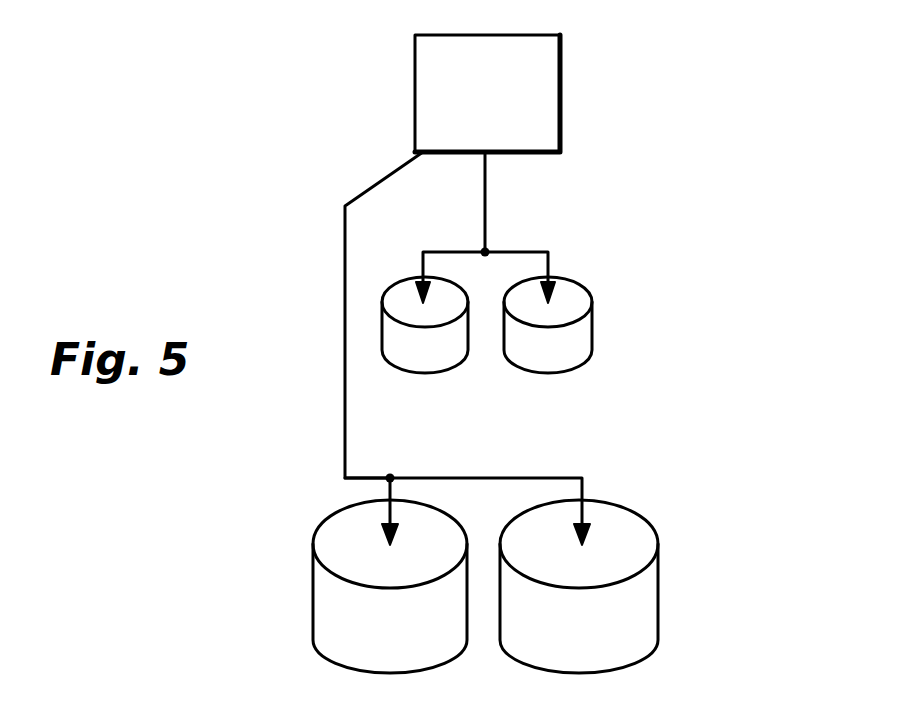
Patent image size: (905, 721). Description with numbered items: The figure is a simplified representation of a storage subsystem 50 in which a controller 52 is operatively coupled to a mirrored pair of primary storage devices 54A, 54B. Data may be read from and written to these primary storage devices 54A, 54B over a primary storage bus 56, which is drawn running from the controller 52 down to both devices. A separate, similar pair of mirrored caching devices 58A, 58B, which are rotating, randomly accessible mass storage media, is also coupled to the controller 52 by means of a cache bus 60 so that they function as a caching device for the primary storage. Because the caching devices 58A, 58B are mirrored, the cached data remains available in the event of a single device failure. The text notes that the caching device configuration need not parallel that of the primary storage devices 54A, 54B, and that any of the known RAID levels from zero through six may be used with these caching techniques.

The storage subsystem 50 is at (638, 235).
The controller 52 is at (415, 78).
The primary storage device 54A is at (335, 623).
The primary storage device 54B is at (625, 630).
The primary storage bus 56 is at (345, 232).
The caching device 58A is at (398, 360).
The caching device 58B is at (555, 360).
The cache bus 60 is at (487, 225).